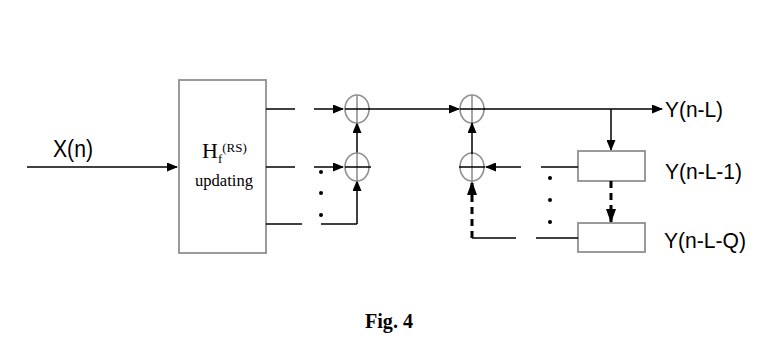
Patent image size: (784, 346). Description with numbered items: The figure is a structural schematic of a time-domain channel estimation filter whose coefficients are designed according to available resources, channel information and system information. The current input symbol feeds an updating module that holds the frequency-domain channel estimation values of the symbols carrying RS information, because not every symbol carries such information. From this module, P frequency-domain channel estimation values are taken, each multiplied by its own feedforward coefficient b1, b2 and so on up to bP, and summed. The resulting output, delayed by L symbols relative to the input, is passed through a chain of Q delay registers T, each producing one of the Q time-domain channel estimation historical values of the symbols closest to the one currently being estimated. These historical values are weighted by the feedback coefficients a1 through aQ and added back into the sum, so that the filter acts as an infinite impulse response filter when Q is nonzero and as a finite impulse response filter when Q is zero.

The first feedforward filter coefficient b1 is at (304, 97).
The second feedforward filter coefficient b2 is at (304, 154).
The P-th feedforward filter coefficient bP is at (311, 222).
The first feedback filter coefficient a1 is at (532, 165).
The Q-th feedback filter coefficient aQ is at (525, 215).
The delay register T is at (611, 180).